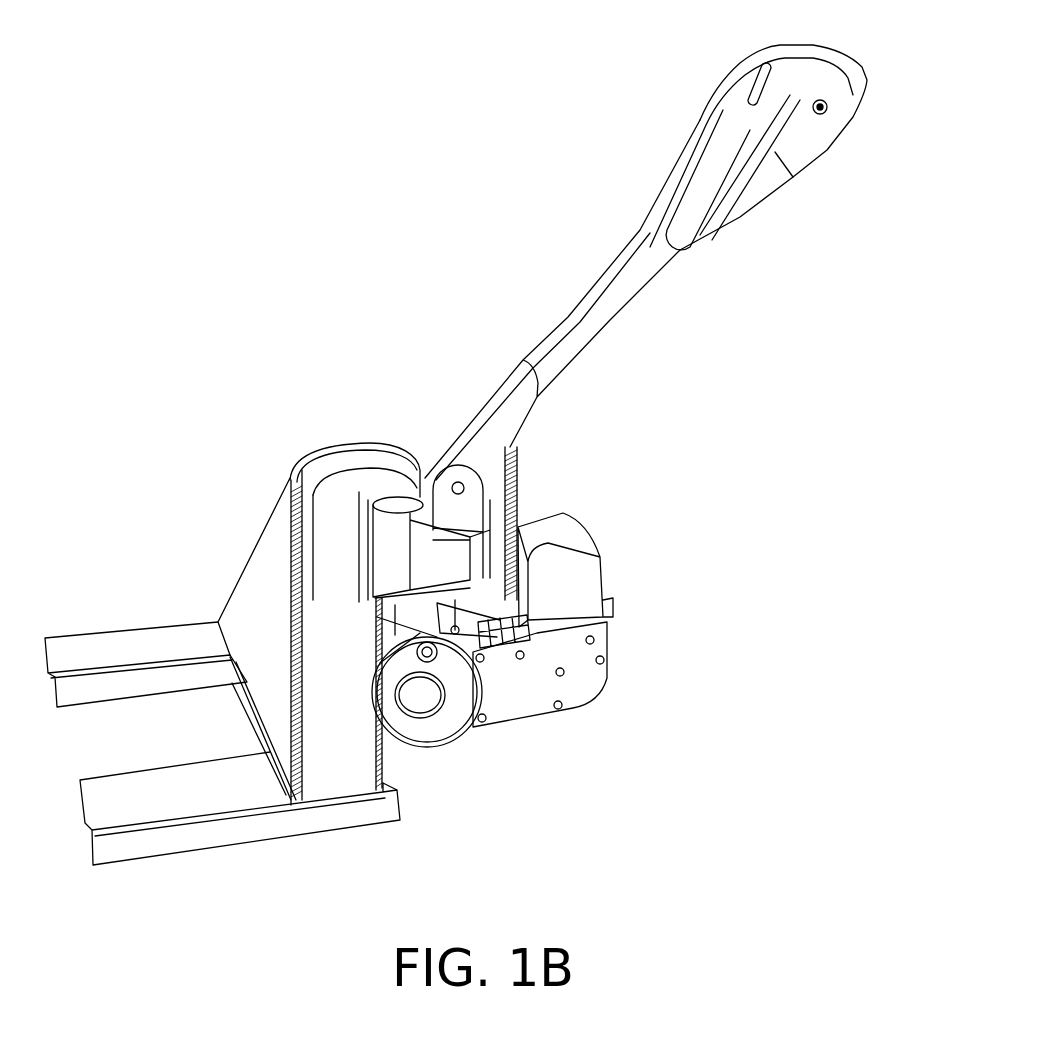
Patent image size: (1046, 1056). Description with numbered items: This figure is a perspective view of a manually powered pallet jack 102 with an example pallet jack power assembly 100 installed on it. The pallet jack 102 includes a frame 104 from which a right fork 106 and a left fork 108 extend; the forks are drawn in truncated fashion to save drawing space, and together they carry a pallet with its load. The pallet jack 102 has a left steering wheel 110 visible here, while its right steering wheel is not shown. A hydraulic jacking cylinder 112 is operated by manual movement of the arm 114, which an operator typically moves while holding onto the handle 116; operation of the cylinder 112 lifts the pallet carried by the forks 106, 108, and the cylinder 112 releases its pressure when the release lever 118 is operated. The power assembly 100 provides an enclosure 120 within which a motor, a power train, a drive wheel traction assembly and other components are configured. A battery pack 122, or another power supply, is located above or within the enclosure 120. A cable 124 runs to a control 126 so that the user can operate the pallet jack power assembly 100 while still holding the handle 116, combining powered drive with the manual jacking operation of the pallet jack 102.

The pallet jack power assembly 100 is at (456, 435).
The pallet jack 102 is at (232, 532).
The frame 104 is at (264, 531).
The right fork 106 is at (166, 624).
The left fork 108 is at (196, 766).
The left steering wheel 110 is at (432, 748).
The hydraulic jacking cylinder 112 is at (390, 512).
The arm 114 is at (567, 317).
The handle 116 is at (693, 130).
The release lever 118 is at (748, 83).
The enclosure 120 is at (575, 687).
The battery pack 122 is at (560, 515).
The cable 124 is at (513, 490).
The control 126 is at (810, 117).